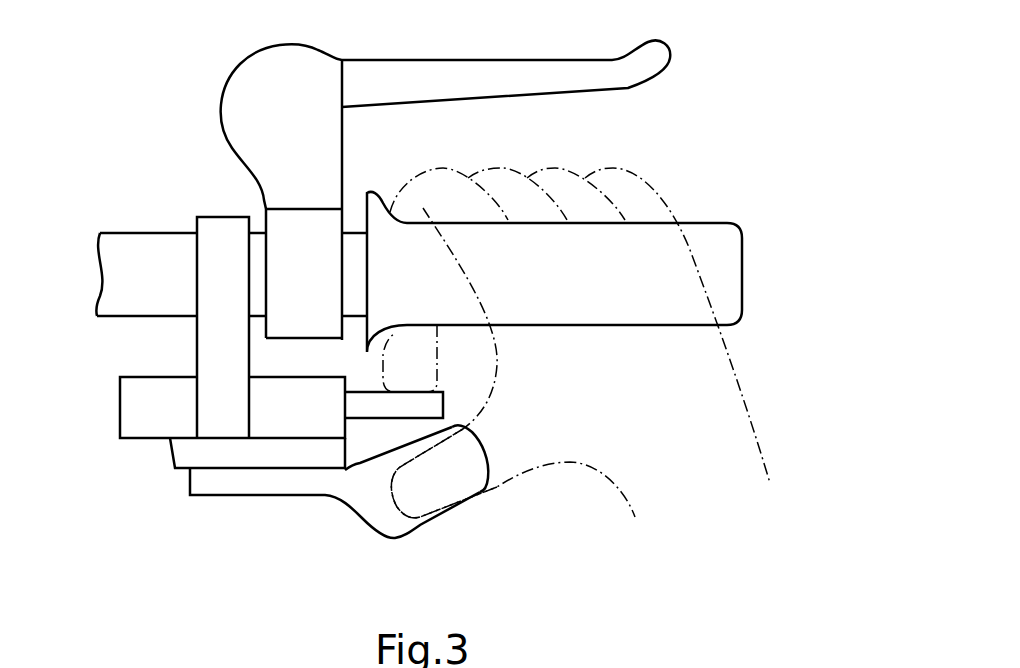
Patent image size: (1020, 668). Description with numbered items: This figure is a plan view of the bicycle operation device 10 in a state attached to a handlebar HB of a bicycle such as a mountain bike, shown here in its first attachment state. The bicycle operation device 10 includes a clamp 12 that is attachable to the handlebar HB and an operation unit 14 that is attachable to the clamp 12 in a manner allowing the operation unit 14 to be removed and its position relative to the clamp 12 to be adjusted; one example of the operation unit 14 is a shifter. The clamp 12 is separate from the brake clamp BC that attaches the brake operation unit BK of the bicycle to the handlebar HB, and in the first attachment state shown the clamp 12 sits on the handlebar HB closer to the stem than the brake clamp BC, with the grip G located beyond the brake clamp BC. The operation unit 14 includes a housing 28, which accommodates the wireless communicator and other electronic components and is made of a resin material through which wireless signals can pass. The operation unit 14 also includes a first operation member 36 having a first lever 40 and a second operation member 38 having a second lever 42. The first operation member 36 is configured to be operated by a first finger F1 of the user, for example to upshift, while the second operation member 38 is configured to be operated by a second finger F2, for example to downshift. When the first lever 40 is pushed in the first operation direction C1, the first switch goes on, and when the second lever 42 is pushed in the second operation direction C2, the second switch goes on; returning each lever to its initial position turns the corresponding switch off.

The bicycle operation device 10 is at (98, 440).
The clamp 12 is at (222, 228).
The operation unit 14 is at (163, 457).
The housing 28 is at (120, 405).
The first operation member 36 is at (488, 443).
The second operation member 38 is at (392, 418).
The first lever 40 is at (362, 512).
The second lever 42 is at (349, 405).
The handlebar HB is at (72, 270).
The brake operation unit BK is at (580, 60).
The brake clamp BC is at (327, 225).
The grip G is at (595, 322).
The first finger F1 is at (427, 500).
The second finger F2 is at (392, 367).
The first operation direction C1 is at (505, 500).
The second operation direction C2 is at (452, 372).